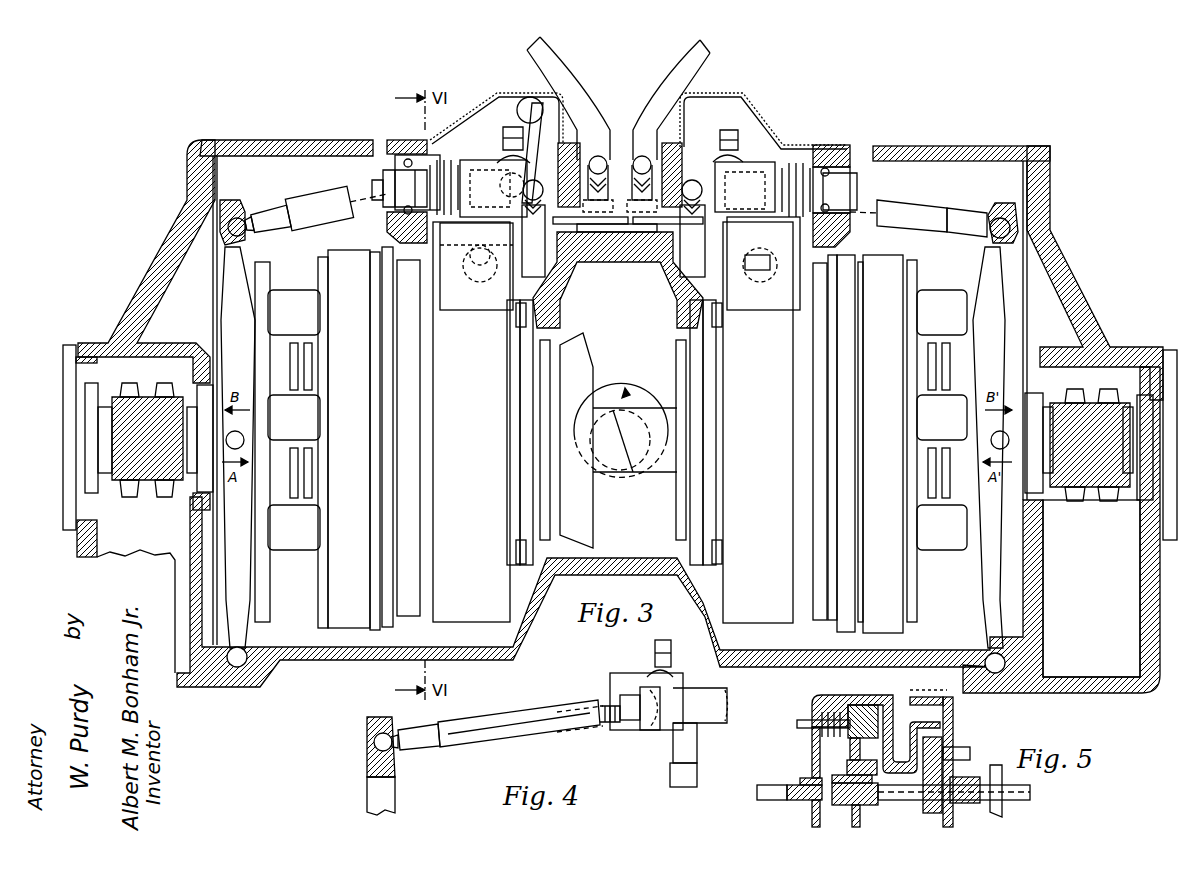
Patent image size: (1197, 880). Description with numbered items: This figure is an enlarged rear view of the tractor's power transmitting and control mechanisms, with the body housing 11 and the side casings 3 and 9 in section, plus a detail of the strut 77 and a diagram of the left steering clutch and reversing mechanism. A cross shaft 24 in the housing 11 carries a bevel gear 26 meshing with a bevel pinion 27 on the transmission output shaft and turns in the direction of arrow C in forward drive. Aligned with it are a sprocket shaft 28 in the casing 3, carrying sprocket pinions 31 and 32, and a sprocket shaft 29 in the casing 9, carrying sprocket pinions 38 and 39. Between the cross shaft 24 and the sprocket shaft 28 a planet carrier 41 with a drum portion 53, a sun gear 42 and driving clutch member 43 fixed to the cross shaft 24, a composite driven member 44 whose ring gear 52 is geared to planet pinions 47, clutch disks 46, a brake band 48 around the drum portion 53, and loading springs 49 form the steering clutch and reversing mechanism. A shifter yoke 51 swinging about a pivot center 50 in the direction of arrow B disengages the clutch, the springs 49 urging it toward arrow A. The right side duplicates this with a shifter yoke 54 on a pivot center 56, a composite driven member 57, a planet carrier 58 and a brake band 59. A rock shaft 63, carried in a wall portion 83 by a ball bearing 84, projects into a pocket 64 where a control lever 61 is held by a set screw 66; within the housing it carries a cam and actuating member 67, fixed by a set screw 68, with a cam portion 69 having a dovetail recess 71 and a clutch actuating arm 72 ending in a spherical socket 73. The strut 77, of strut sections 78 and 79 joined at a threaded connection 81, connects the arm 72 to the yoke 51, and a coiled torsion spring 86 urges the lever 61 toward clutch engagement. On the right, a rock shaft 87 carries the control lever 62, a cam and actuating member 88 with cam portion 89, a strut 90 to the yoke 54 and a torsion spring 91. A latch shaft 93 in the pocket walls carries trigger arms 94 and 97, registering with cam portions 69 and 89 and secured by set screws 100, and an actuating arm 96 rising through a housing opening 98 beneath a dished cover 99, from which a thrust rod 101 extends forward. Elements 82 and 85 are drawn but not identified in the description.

In FIG. 3, the casing 3 is at (80, 545).
In FIG. 3, the casing 9 is at (1158, 648).
In FIG. 3, the body housing 11 is at (335, 152).
In FIG. 3, the cross shaft 24 is at (640, 475).
In FIG. 5, the cross shaft 24 is at (1012, 790).
In FIG. 3, the bevel gear 26 is at (590, 518).
In FIG. 5, the bevel gear 26 is at (1003, 805).
In FIG. 3, the bevel pinion 27 is at (640, 400).
In FIG. 3, the sprocket shaft 28 is at (112, 480).
In FIG. 5, the sprocket shaft 28 is at (770, 793).
In FIG. 3, the sprocket shaft 29 is at (1133, 487).
In FIG. 3, the sprocket pinion 31 is at (128, 497).
In FIG. 3, the sprocket pinion 32 is at (165, 497).
In FIG. 3, the sprocket pinion 38 is at (1110, 392).
In FIG. 3, the sprocket pinion 39 is at (1077, 392).
In FIG. 3, the planet carrier 41 is at (510, 518).
In FIG. 5, the planet carrier 41 is at (985, 726).
In FIG. 5, the sun gear 42 is at (930, 812).
In FIG. 5, the driving clutch member 43 is at (862, 812).
In FIG. 3, the composite driven member 44 is at (322, 600).
In FIG. 5, the composite driven member 44 is at (812, 752).
In FIG. 5, the clutch disks 46 is at (866, 703).
In FIG. 5, the planet pinions 47 is at (955, 748).
In FIG. 3, the brake band 48 is at (472, 612).
In FIG. 5, the brake band 48 is at (930, 690).
In FIG. 5, the loading springs 49 is at (833, 737).
In FIG. 3, the pivot center 50 is at (243, 640).
In FIG. 3, the clutch shifter yoke 51 is at (240, 292).
In FIG. 4, the clutch shifter yoke 51 is at (393, 806).
In FIG. 5, the ring gear 52 is at (918, 725).
In FIG. 5, the drum portion 53 is at (953, 704).
In FIG. 3, the clutch shifter yoke 54 is at (992, 272).
In FIG. 3, the pivot center 56 is at (988, 655).
In FIG. 3, the composite driven member 57 is at (905, 607).
In FIG. 3, the planet carrier 58 is at (725, 510).
In FIG. 3, the brake band 59 is at (752, 615).
In FIG. 3, the control lever 61 is at (570, 62).
In FIG. 3, the control lever 62 is at (668, 62).
In FIG. 3, the rock shaft 63 is at (385, 185).
In FIG. 4, the rock shaft 63 is at (715, 715).
In FIG. 3, the pocket 64 is at (593, 245).
In FIG. 3, the set screw 66 is at (610, 158).
In FIG. 3, the cam and actuating member 67 is at (495, 160).
In FIG. 4, the cam and actuating member 67 is at (640, 664).
In FIG. 3, the set screw 68 is at (510, 127).
In FIG. 4, the set screw 68 is at (660, 640).
In FIG. 3, the cam portion 69 is at (530, 265).
In FIG. 4, the cam portion 69 is at (685, 787).
In FIG. 3, the dovetail recess 71 is at (520, 238).
In FIG. 4, the dovetail recess 71 is at (697, 760).
In FIG. 3, the clutch actuating arm 72 is at (480, 247).
In FIG. 4, the clutch actuating arm 72 is at (650, 730).
In FIG. 3, the spherical socket 73 is at (513, 177).
In FIG. 4, the spherical socket 73 is at (650, 681).
In FIG. 3, the strut 77 is at (305, 205).
In FIG. 4, the strut 77 is at (498, 712).
In FIG. 4, the strut section 78 is at (486, 735).
In FIG. 4, the strut section 79 is at (628, 722).
In FIG. 4, the threaded connection 81 is at (580, 733).
In FIG. 4, the ball pivot 82 is at (368, 748).
In FIG. 3, the wall portion 83 is at (404, 232).
In FIG. 3, the ball bearing 84 is at (390, 213).
In FIG. 3, the boss 85 is at (757, 245).
In FIG. 3, the coiled torsion spring 86 is at (448, 165).
In FIG. 3, the rock shaft 87 is at (860, 192).
In FIG. 3, the cam and actuating member 88 is at (757, 165).
In FIG. 3, the cam portion 89 is at (705, 262).
In FIG. 3, the strut 90 is at (935, 208).
In FIG. 3, the coiled torsion spring 91 is at (795, 165).
In FIG. 3, the latch shaft 93 is at (625, 230).
In FIG. 3, the trigger arm 94 is at (560, 222).
In FIG. 3, the actuating arm 96 is at (545, 135).
In FIG. 3, the trigger arm 97 is at (690, 222).
In FIG. 3, the housing opening 98 is at (437, 145).
In FIG. 3, the dished cover 99 is at (480, 110).
In FIG. 3, the set screw 100 is at (695, 178).
In FIG. 3, the thrust rod 101 is at (532, 100).